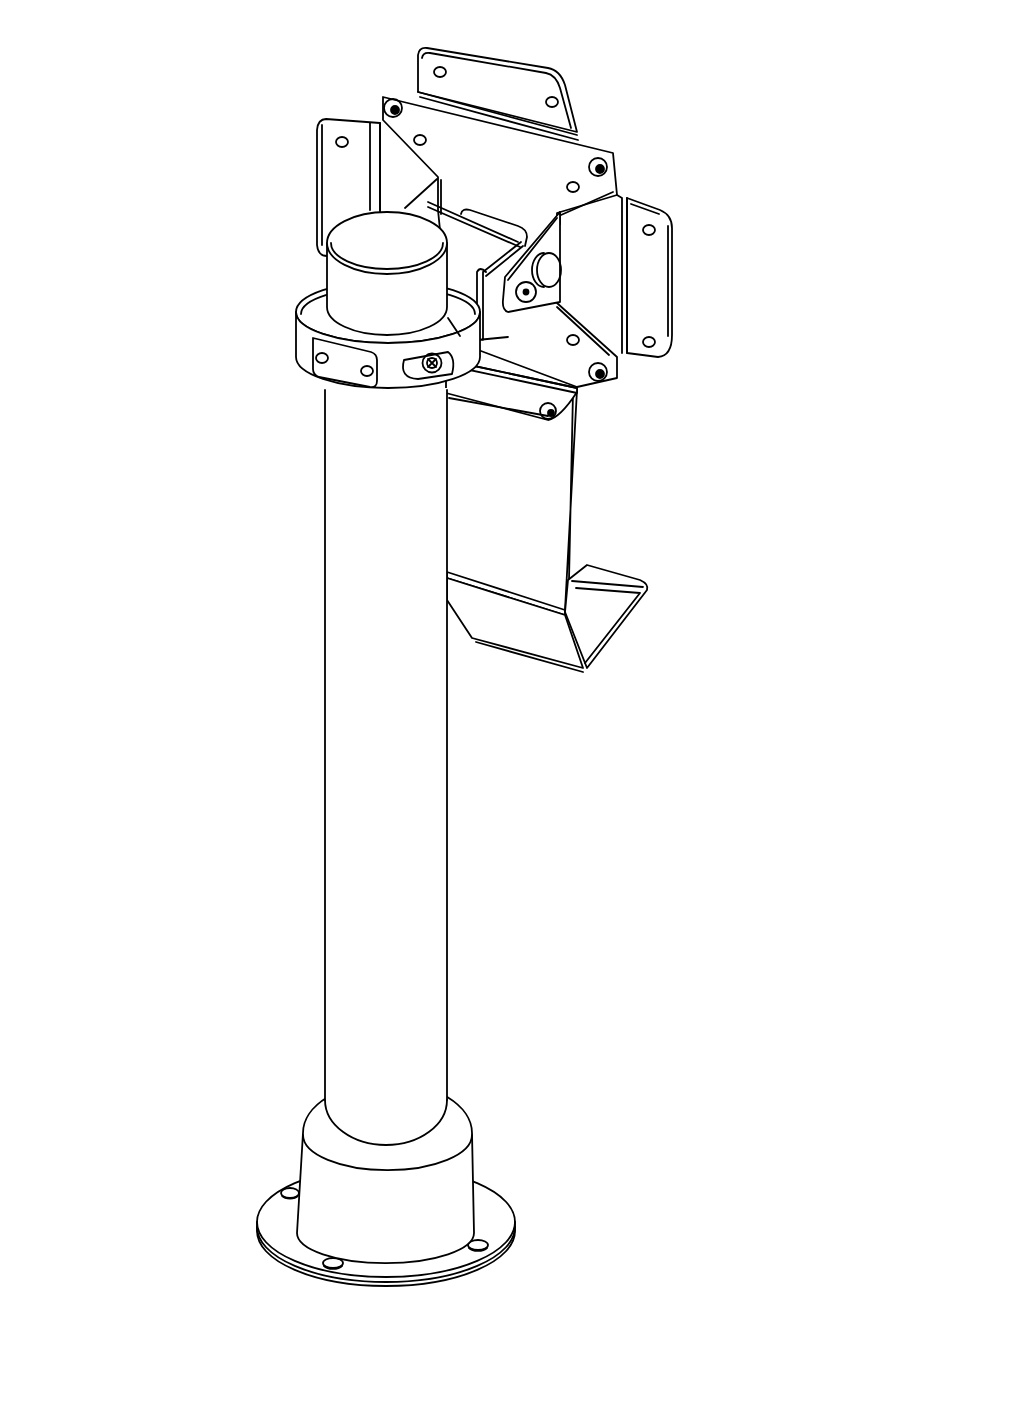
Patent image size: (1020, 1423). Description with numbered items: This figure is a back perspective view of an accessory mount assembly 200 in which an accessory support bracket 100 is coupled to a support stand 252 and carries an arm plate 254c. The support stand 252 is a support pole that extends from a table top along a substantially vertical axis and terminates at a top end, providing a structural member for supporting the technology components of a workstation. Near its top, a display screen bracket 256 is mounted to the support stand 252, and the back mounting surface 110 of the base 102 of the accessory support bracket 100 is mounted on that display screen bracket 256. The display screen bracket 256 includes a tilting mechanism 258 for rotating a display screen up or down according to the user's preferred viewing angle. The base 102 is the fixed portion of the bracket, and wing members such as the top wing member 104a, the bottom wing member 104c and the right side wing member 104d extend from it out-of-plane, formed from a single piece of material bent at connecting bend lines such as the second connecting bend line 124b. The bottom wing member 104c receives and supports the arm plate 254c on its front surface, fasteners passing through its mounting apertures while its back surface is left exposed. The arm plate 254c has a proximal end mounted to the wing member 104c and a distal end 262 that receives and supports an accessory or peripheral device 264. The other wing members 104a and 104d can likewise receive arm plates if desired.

The mounting assembly 200 is at (168, 130).
The accessory support bracket 100 is at (642, 162).
The base 102 is at (599, 322).
The top wing member 104a is at (488, 90).
The bottom wing member 104c is at (483, 394).
The right side wing member 104d is at (340, 167).
The back mounting surface 110 is at (400, 178).
The second connecting bend line 124b is at (641, 263).
The support stand 252 is at (325, 738).
The arm plate 254c is at (578, 510).
The display screen bracket 256 is at (300, 312).
The tilting mechanism 258 is at (474, 249).
The distal end 262 is at (652, 588).
The accessory or peripheral device 264 is at (602, 585).